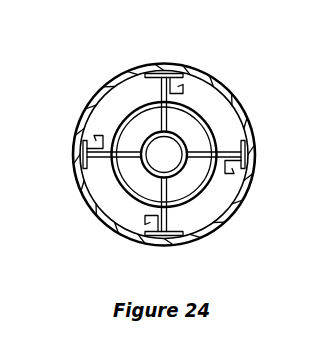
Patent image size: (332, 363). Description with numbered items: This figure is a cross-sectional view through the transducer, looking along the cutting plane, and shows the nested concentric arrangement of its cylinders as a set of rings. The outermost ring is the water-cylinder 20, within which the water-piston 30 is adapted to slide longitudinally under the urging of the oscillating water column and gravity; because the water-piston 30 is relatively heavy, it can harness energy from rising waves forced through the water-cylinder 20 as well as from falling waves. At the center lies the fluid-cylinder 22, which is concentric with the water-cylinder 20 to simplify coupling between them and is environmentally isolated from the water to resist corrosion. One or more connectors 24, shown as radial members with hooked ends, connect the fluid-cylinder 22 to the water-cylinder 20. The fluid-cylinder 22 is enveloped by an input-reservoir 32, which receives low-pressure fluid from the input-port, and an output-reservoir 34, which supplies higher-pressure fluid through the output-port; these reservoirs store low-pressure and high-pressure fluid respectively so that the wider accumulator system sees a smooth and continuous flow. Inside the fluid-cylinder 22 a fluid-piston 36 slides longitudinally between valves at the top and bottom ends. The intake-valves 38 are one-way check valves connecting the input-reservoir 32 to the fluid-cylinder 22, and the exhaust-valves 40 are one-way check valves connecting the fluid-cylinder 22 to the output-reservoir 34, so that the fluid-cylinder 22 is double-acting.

The water-cylinder 20 is at (98, 222).
The fluid-cylinder 22 is at (196, 156).
The connectors 24 is at (178, 73).
The water-piston 30 is at (188, 221).
The input-reservoir 32 is at (147, 122).
The output-reservoir 34 is at (183, 125).
The fluid-piston 36 is at (124, 120).
The intake-valves 38 is at (103, 167).
The exhaust-valves 40 is at (214, 164).